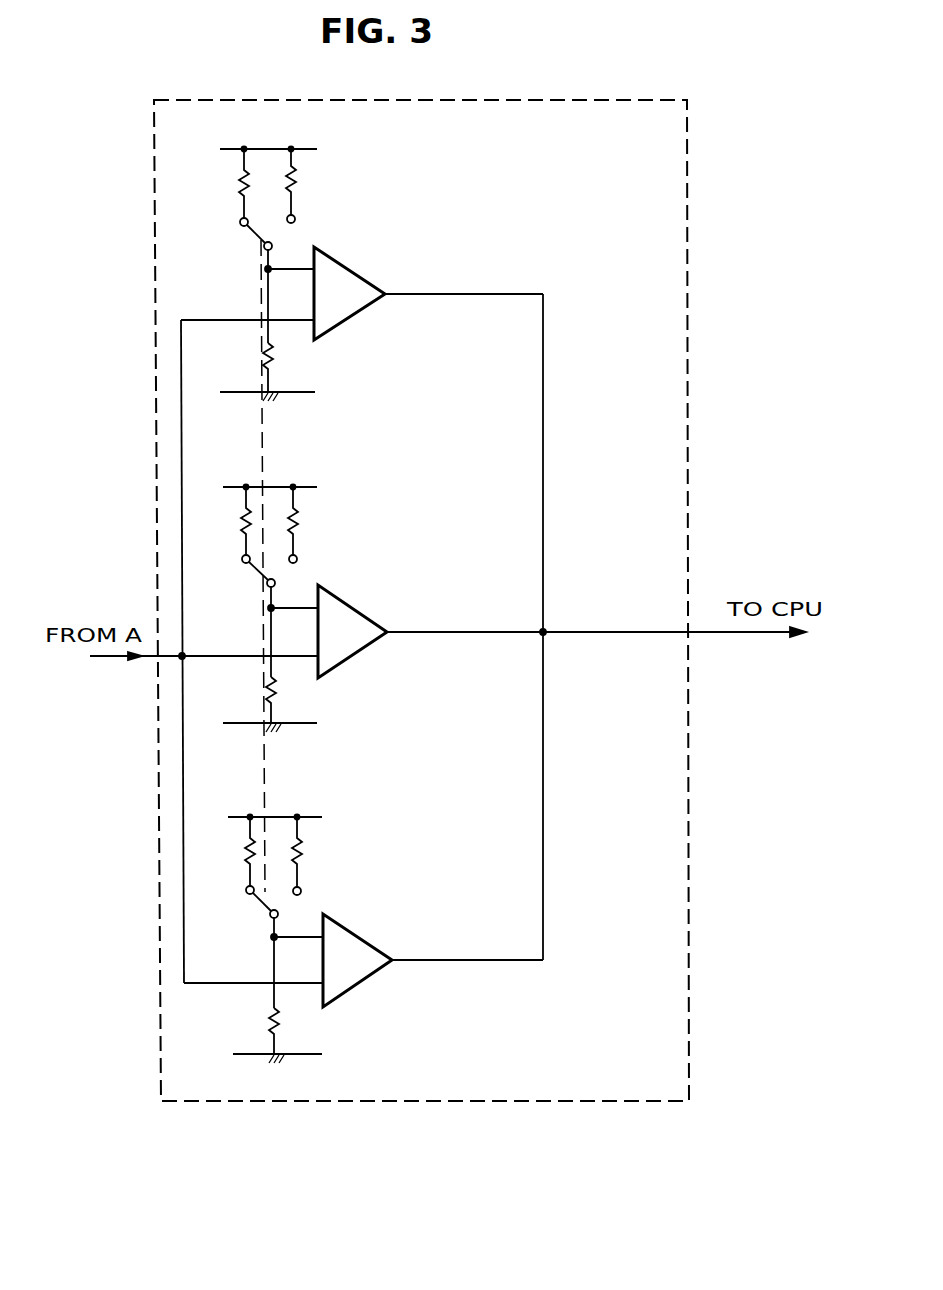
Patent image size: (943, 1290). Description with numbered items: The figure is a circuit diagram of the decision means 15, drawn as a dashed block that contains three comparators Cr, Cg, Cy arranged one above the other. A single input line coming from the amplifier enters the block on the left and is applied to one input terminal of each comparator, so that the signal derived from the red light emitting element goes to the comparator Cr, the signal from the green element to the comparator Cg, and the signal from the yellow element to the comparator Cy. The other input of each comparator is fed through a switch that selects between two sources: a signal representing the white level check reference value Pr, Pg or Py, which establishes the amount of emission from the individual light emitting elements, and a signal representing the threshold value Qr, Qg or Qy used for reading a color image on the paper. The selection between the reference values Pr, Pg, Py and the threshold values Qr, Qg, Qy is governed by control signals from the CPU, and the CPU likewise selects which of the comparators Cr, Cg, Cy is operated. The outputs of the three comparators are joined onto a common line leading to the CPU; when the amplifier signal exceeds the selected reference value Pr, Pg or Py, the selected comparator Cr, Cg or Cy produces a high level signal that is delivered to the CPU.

The decision means 15 is at (191, 1102).
The white level check reference value for red Pr is at (295, 220).
The threshold value for red Qr is at (241, 228).
The comparator for red Cr is at (356, 314).
The white level check reference value for green Pg is at (297, 559).
The threshold value for green Qg is at (243, 565).
The comparator for green Cg is at (363, 648).
The white level check reference value for yellow Py is at (301, 890).
The threshold value for yellow Qy is at (247, 897).
The comparator for yellow Cy is at (370, 978).